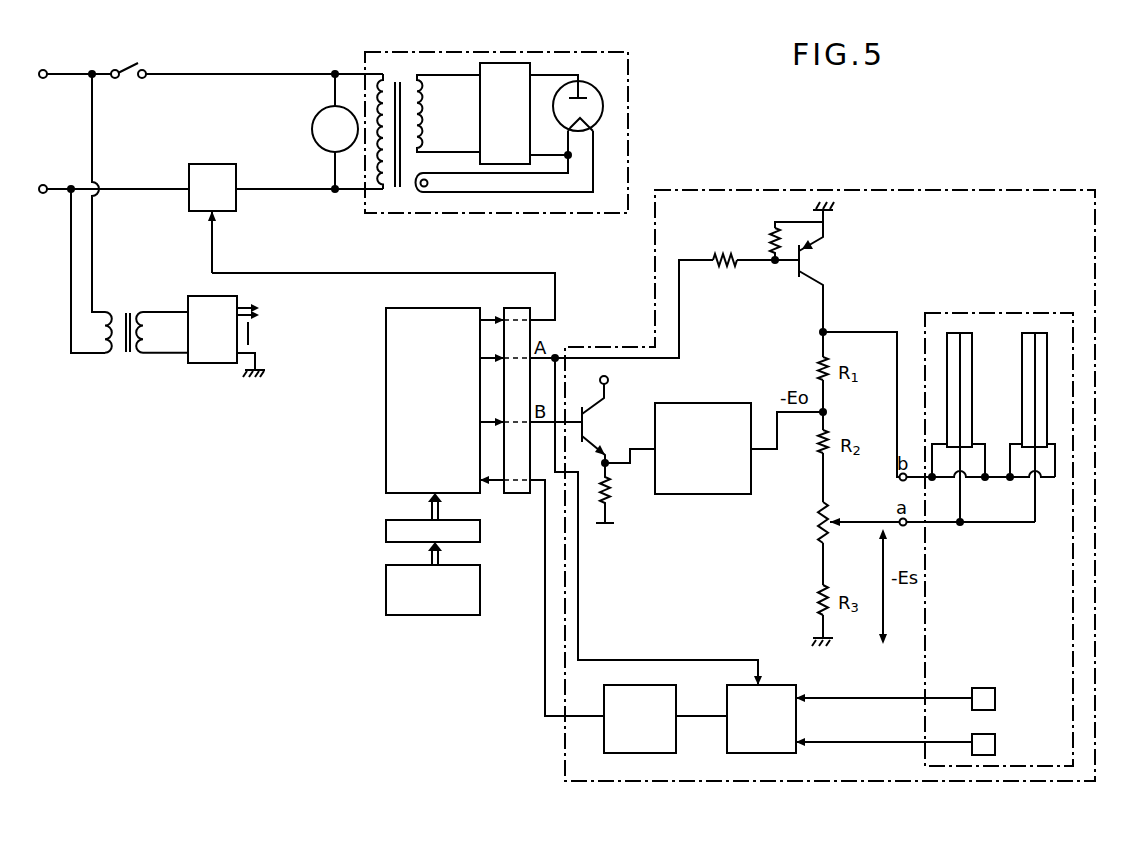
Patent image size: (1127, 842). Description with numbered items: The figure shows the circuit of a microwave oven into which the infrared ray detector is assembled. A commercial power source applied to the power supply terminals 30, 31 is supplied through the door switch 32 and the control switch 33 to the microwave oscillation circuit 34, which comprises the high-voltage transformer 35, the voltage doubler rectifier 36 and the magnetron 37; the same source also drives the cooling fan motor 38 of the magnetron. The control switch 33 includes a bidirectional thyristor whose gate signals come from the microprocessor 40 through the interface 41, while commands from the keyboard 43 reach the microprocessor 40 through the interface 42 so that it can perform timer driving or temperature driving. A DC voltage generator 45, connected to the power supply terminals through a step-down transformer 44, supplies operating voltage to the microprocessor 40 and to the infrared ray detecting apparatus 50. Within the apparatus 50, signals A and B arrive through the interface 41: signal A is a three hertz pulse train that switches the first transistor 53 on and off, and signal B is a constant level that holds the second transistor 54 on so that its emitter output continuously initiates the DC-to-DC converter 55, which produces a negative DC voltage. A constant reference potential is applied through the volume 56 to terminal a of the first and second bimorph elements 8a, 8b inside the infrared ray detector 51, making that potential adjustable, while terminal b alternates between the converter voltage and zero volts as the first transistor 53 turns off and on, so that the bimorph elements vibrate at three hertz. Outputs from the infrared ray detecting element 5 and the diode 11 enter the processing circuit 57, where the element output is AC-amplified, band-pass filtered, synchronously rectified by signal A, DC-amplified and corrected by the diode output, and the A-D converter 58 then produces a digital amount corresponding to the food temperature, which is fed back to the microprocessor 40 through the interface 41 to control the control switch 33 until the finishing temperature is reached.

The power supply terminal 30 is at (43, 78).
The power supply terminal 31 is at (43, 193).
The door switch 32 is at (128, 78).
The control switch 33 is at (236, 170).
The microwave oscillation circuit 34 is at (628, 66).
The high-voltage transformer 35 is at (410, 73).
The voltage doubler rectifier 36 is at (510, 63).
The magnetron 37 is at (603, 106).
The cooling fan motor 38 is at (312, 129).
The microprocessor 40 is at (386, 455).
The interface 41 is at (525, 336).
The interface 42 is at (386, 527).
The keyboard 43 is at (386, 588).
The transformer 44 is at (128, 355).
The DC voltage generator 45 is at (215, 363).
The infrared ray detecting apparatus 50 is at (999, 188).
The infrared ray detector 51 is at (1027, 312).
The first transistor 53 is at (815, 265).
The second transistor 54 is at (595, 420).
The DC-to-DC converter 55 is at (712, 494).
The volume 56 is at (812, 528).
The processing circuit 57 is at (770, 685).
The A-D converter 58 is at (676, 695).
The infrared ray detecting element 5 is at (995, 696).
The diode 11 is at (995, 743).
The electrode 8a is at (972, 376).
The electrode 8b is at (1050, 362).